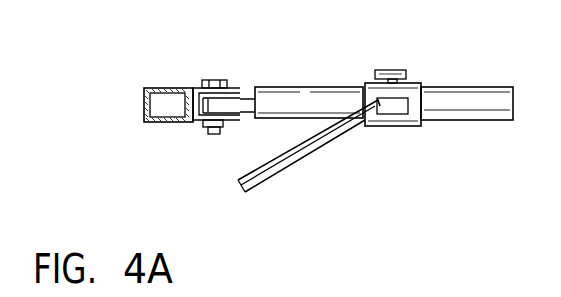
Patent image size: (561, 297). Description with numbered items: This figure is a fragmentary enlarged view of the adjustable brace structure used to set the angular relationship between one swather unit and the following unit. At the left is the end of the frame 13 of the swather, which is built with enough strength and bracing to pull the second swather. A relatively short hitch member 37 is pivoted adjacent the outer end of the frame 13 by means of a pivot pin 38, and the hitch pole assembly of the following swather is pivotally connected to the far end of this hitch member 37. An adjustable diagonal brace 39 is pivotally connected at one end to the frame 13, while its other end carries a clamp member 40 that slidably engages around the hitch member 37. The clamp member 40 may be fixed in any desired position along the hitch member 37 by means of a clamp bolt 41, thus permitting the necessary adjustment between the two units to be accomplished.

The frame 13 is at (172, 121).
The hitch member 37 is at (313, 95).
The pivot pin 38 is at (218, 80).
The adjustable diagonal brace 39 is at (310, 148).
The clamp member 40 is at (423, 87).
The clamp bolt 41 is at (392, 70).